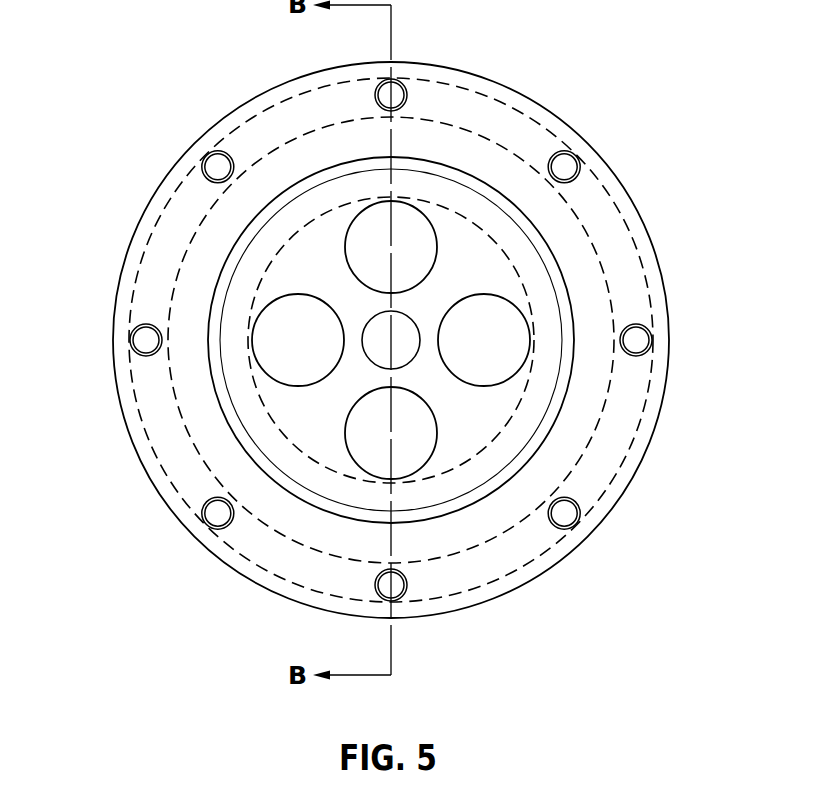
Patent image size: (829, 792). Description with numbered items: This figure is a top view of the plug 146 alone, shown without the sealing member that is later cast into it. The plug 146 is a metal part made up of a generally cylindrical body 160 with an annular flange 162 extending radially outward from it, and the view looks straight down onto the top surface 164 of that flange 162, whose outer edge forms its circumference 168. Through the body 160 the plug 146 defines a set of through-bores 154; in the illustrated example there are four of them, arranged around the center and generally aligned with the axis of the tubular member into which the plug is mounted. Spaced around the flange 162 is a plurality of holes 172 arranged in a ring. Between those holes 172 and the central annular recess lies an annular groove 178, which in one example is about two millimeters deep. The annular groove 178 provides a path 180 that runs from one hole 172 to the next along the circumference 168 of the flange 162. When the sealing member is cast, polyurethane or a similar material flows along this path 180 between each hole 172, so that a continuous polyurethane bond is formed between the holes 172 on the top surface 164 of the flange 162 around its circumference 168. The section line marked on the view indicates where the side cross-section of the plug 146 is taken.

The plug 146 is at (624, 46).
The through-bore 154 is at (437, 246).
The cylindrical body 160 is at (320, 200).
The annular flange 162 is at (219, 568).
The top surface 164 is at (262, 581).
The circumference 168 is at (181, 525).
The holes 172 is at (408, 93).
The annular groove 178 is at (610, 460).
The path 180 is at (613, 230).